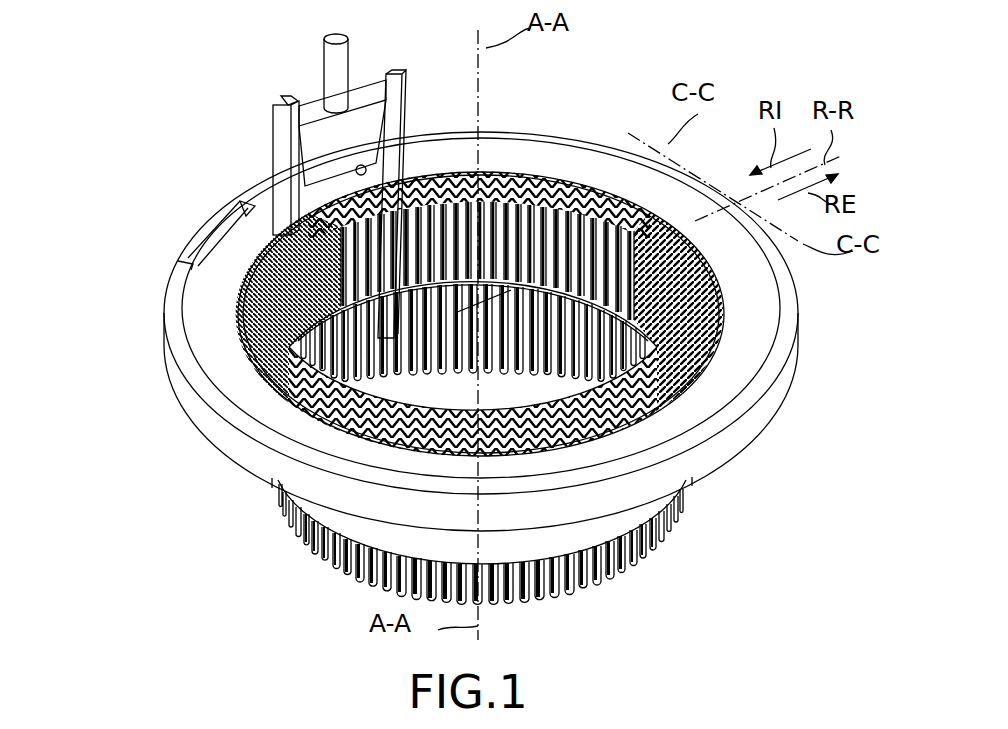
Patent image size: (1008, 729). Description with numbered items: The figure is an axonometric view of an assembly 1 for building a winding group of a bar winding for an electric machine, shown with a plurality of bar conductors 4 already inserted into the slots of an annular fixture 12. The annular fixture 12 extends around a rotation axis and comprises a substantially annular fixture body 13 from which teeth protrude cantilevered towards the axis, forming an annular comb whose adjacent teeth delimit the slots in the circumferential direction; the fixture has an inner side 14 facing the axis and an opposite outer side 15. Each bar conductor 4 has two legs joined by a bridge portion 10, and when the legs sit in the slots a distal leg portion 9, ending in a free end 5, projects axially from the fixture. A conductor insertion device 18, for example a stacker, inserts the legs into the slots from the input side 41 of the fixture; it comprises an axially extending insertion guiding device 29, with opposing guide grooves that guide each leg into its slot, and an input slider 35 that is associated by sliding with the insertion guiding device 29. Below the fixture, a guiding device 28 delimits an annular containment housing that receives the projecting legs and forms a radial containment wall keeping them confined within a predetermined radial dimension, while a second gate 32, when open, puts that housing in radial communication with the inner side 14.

The assembly 1 is at (241, 181).
The bar conductor 4 is at (270, 225).
The free end 5 is at (573, 583).
The distal leg portion 9 is at (580, 565).
The bridge portion 10 is at (353, 123).
The annular fixture 12 is at (779, 353).
The fixture body 13 is at (226, 393).
The inner side 14 is at (611, 320).
The outer side 15 is at (787, 404).
The conductor insertion device 18 is at (307, 90).
The guiding device 28 is at (657, 533).
The insertion guiding device 29 is at (275, 96).
The second gate 32 is at (380, 316).
The input slider 35 is at (312, 128).
The input side 41 is at (558, 125).